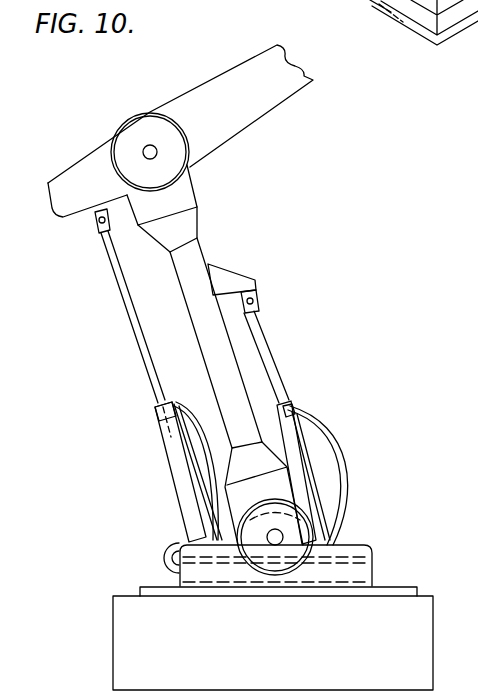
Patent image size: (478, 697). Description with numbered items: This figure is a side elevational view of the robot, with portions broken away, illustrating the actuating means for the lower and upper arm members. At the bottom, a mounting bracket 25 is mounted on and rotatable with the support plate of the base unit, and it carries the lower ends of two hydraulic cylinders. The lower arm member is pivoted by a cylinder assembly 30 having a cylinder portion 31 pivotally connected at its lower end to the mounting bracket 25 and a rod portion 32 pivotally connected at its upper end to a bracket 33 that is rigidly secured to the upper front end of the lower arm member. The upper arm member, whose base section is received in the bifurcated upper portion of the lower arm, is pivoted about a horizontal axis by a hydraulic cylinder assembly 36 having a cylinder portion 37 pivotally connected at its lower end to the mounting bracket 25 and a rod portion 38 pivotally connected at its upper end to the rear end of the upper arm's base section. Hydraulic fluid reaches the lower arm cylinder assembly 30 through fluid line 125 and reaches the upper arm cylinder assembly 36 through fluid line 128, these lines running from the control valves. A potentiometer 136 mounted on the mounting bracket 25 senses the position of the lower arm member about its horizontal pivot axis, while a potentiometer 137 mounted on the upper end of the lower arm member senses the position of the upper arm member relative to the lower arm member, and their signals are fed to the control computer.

The mounting bracket 25 is at (375, 567).
The cylinder assembly 30 is at (288, 392).
The cylinder portion 31 is at (303, 463).
The rod portion 32 is at (269, 343).
The bracket 33 is at (233, 272).
The hydraulic cylinder assembly 36 is at (156, 414).
The cylinder portion 37 is at (177, 490).
The rod portion 38 is at (127, 318).
The fluid line 125 is at (326, 433).
The fluid line 128 is at (203, 450).
The potentiometer 136 is at (283, 537).
The potentiometer 137 is at (157, 156).